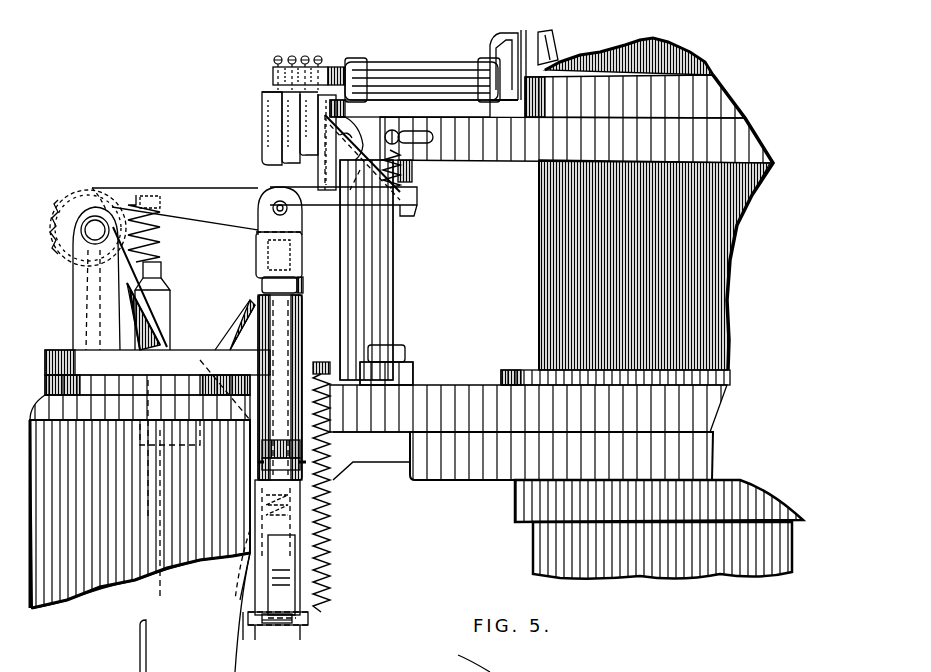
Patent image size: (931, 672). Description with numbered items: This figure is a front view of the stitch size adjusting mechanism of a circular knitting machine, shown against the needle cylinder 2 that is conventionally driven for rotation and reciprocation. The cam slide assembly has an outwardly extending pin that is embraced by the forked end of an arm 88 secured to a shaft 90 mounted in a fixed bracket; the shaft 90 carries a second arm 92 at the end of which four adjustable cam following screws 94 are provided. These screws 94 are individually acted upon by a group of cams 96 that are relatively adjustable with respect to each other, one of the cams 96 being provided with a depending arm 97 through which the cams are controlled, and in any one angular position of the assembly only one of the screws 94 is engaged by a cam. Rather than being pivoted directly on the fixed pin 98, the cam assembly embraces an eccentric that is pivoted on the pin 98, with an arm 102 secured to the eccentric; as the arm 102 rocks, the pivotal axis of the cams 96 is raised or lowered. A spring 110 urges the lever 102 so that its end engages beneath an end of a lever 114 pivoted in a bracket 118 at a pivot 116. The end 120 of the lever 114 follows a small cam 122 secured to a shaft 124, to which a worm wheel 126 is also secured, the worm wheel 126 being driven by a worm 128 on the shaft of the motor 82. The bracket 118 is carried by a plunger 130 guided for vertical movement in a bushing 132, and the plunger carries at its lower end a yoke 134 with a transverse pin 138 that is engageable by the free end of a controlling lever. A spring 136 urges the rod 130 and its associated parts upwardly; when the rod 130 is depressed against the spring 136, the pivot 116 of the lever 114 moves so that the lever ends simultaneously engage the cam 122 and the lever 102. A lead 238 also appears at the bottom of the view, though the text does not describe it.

The needle cylinder 2 is at (538, 290).
The motor 82 is at (65, 585).
The arm 88 is at (518, 58).
The shaft 90 is at (417, 70).
The second arm 92 is at (273, 72).
The adjustable cam following screws 94 is at (318, 56).
The cams 96 is at (312, 138).
The depending arm 97 is at (310, 175).
The pin 98 is at (352, 130).
The arm 102 is at (343, 201).
The spring 110 is at (412, 171).
The lever 114 is at (217, 222).
The pivot 116 is at (272, 208).
The bracket 118 is at (300, 262).
The end of lever 120 is at (97, 188).
The small cam 122 is at (67, 255).
The shaft 124 is at (88, 224).
The worm wheel 126 is at (56, 222).
The worm 128 is at (163, 233).
The plunger 130 is at (275, 450).
The bushing 132 is at (312, 320).
The yoke 134 is at (305, 575).
The spring 136 is at (332, 506).
The transverse pin 138 is at (287, 627).
The lead 238 is at (452, 671).